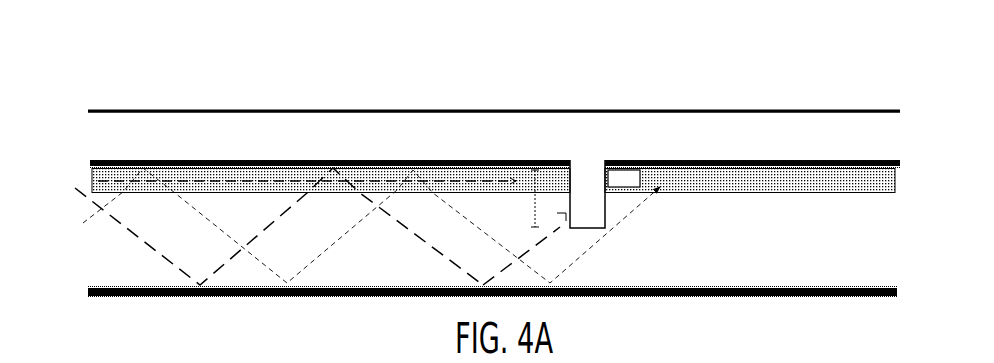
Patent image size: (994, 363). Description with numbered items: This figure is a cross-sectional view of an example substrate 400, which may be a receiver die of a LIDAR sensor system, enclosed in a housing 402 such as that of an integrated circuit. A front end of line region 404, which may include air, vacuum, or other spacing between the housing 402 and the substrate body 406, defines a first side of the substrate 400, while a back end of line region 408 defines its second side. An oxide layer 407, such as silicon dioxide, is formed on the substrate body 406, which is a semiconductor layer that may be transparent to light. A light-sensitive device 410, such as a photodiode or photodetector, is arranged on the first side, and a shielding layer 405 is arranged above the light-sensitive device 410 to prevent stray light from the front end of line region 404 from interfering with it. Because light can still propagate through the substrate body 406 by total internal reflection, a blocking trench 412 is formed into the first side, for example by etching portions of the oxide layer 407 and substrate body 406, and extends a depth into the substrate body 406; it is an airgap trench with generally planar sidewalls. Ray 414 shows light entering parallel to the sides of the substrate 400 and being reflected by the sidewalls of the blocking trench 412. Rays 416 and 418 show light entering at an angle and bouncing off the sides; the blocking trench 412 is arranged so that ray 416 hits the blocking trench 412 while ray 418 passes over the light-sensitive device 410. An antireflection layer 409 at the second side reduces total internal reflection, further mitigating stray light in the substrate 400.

The substrate 400 is at (70, 73).
The housing 402 is at (170, 109).
The front end of line (FEOL) region 404 is at (111, 131).
The shielding layer 405 is at (92, 161).
The substrate body 406 is at (71, 222).
The oxide layer 407 is at (92, 173).
The back end of line (BEOL) region 408 is at (95, 315).
The antireflection layer 409 is at (88, 291).
The light-sensitive device 410 is at (625, 189).
The blocking trench 412 is at (589, 229).
The ray 414 is at (234, 186).
The ray 416 is at (547, 245).
The ray 418 is at (458, 219).